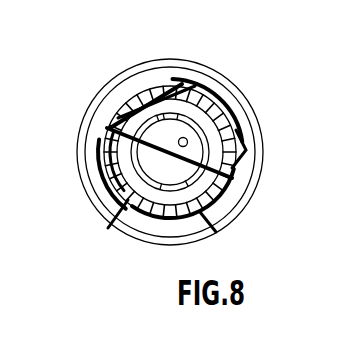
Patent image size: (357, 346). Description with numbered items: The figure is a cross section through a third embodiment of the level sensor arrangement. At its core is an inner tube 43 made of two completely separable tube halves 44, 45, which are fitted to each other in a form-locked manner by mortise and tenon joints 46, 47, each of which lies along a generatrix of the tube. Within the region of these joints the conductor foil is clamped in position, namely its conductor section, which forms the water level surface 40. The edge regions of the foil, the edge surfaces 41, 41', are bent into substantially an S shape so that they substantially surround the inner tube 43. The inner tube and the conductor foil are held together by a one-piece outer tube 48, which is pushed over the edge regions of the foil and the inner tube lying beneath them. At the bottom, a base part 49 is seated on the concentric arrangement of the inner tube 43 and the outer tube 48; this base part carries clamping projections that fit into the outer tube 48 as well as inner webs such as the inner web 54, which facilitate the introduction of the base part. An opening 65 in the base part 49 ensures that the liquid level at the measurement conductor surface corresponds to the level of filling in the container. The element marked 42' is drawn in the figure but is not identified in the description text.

The water level surface 40 is at (158, 75).
The edge surface 41 is at (223, 236).
The edge surface 41' is at (131, 93).
The spring 42' is at (268, 143).
The inner tube 43 is at (108, 222).
The tube half 44 is at (162, 235).
The tube half 45 is at (238, 113).
The mortise and tenon joint 46 is at (88, 122).
The mortise and tenon joint 47 is at (230, 168).
The outer tube 48 is at (84, 173).
The base part 49 is at (247, 197).
The inner web 54 is at (196, 92).
The opening 65 is at (184, 137).